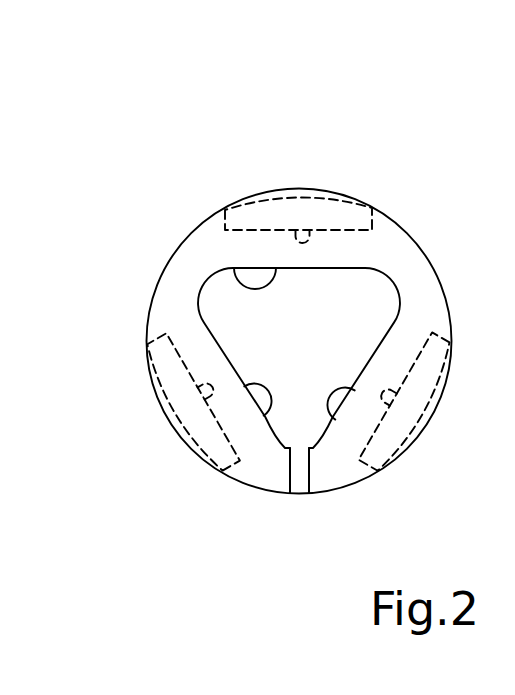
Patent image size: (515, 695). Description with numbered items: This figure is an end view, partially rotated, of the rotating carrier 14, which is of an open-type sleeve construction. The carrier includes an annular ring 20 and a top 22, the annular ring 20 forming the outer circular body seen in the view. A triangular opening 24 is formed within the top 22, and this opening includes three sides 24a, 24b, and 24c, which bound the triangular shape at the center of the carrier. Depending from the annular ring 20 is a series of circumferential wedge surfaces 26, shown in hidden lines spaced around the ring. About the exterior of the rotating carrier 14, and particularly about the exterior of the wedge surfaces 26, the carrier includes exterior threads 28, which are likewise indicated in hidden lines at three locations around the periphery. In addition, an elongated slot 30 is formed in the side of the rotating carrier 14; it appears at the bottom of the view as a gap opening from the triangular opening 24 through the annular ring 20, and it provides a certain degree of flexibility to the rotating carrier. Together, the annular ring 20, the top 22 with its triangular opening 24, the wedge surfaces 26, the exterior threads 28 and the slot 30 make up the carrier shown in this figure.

The rotating carrier 14 is at (338, 127).
The annular ring 20 is at (181, 245).
The top 22 is at (395, 250).
The triangular opening 24 is at (328, 296).
The side 24a is at (262, 418).
The side 24b is at (335, 420).
The side 24c is at (250, 286).
The circumferential wedge surfaces 26 is at (312, 230).
The exterior threads 28 is at (278, 198).
The elongated slot 30 is at (291, 478).